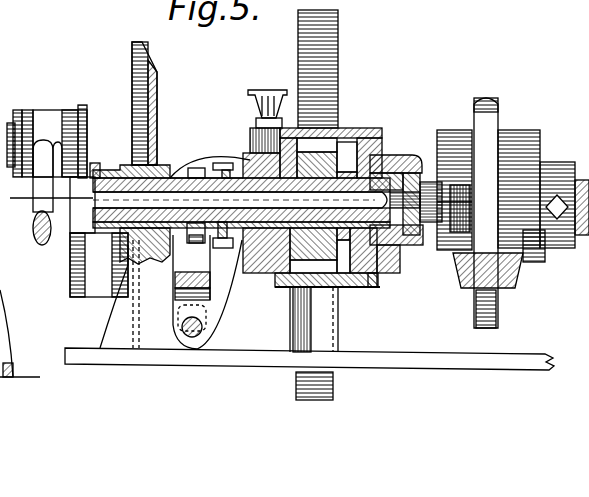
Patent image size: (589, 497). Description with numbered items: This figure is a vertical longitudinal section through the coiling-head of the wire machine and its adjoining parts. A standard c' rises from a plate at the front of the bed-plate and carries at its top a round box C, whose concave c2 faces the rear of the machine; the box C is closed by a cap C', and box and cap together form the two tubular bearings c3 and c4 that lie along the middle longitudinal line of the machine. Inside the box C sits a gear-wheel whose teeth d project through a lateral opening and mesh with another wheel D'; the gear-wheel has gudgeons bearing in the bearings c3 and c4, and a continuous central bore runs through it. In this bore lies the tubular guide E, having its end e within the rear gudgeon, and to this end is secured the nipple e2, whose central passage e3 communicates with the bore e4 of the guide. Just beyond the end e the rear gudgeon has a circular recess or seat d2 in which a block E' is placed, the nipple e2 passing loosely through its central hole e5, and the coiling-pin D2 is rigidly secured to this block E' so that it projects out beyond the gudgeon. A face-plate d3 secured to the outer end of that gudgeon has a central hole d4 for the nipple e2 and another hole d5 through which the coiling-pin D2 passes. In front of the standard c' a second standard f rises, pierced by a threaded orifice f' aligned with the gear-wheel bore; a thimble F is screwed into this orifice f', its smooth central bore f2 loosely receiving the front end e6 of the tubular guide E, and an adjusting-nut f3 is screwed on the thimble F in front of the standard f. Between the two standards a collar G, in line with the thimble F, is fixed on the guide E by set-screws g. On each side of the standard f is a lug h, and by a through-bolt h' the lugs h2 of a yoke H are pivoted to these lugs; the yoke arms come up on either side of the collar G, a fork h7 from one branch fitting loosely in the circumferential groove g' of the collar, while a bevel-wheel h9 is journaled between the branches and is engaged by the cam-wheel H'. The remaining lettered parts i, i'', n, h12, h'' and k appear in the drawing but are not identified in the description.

The base plate i is at (277, 333).
The pedestal support i'' is at (326, 319).
The shaft n is at (47, 189).
The smooth central bore f2 is at (93, 188).
The standard f is at (127, 294).
The adjusting-nut f3 is at (130, 207).
The thimble F is at (118, 163).
The threaded orifice f' is at (168, 145).
The cam-wheel H' is at (157, 99).
The plate edge h12 is at (130, 72).
The plate portion h'' is at (174, 89).
The front end of tubular guide e6 is at (102, 201).
The bore of tubular guide e4 is at (359, 201).
The collar G is at (210, 165).
The circumferential groove g' is at (201, 205).
The set-screws g is at (223, 213).
The bevel-wheel h9 is at (205, 150).
The fork h7 is at (224, 163).
The round box C is at (312, 188).
The cap C' is at (396, 201).
The standard c' is at (246, 321).
The concave c2 is at (346, 160).
The tubular bearing c3 is at (250, 176).
The tubular bearing c4 is at (402, 156).
The teeth d is at (352, 138).
The wheel D' is at (330, 69).
The coiling-pin D2 is at (430, 290).
The circular recess or seat d2 is at (410, 173).
The central hole e5 is at (425, 155).
The face-plate d3 is at (428, 190).
The central hole d4 is at (440, 215).
The tubular guide E is at (491, 209).
The hole d5 is at (486, 213).
The block E' is at (474, 208).
The end of tubular guide e is at (380, 286).
The nipple e2 is at (398, 262).
The central passage e3 is at (414, 262).
The keyed gear k is at (564, 205).
The yoke H is at (207, 292).
The lugs of yoke h2 is at (222, 300).
The through-bolt h' is at (214, 326).
The lug h is at (191, 353).